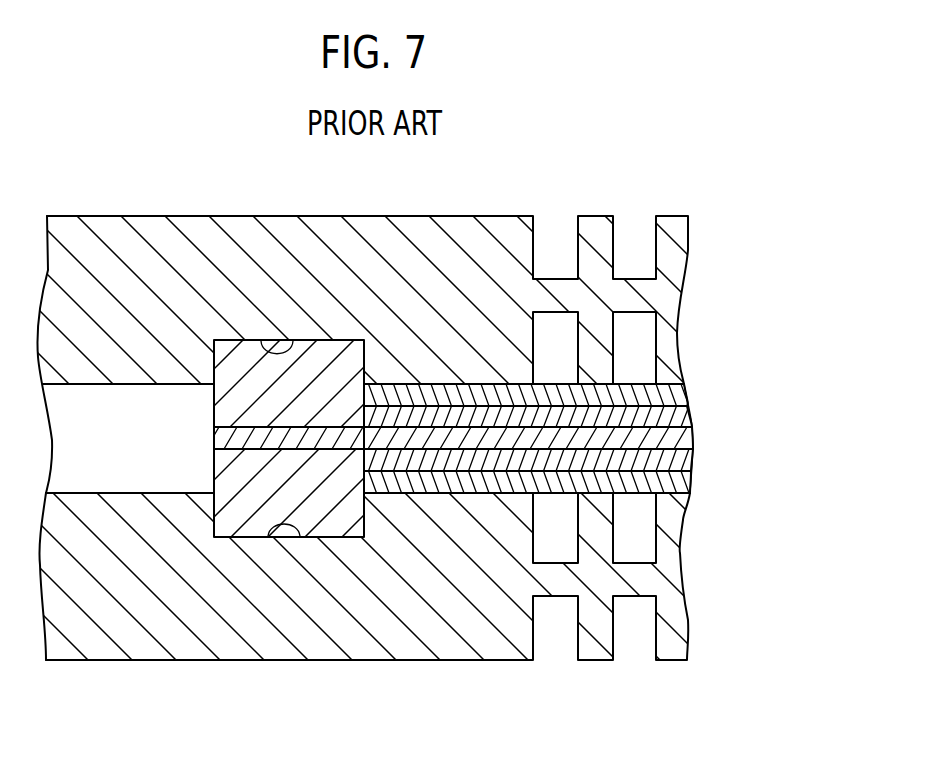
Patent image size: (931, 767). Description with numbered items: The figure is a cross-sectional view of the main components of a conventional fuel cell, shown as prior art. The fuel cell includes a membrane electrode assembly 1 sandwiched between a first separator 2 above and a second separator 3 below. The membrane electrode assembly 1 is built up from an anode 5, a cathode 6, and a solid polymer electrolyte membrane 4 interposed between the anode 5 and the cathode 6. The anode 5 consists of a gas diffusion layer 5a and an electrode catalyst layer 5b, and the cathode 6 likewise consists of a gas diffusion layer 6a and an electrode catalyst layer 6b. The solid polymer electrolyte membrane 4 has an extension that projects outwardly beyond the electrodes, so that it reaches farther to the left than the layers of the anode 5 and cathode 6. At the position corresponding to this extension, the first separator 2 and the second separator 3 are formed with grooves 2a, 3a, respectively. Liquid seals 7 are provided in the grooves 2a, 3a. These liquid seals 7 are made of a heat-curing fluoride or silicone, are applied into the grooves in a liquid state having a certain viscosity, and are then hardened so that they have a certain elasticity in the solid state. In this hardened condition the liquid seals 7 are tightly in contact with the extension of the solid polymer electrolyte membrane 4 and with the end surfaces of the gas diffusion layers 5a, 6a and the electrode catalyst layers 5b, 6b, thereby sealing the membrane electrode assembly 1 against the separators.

The membrane electrode assembly 1 is at (795, 373).
The first separator 2 is at (665, 303).
The groove 2a is at (293, 341).
The second separator 3 is at (665, 580).
The groove 3a is at (302, 538).
The solid polymer electrolyte membrane 4 is at (680, 445).
The anode 5 is at (750, 373).
The gas diffusion layer 5a is at (672, 398).
The electrode catalyst layer 5b is at (677, 413).
The cathode 6 is at (750, 460).
The gas diffusion layer 6a is at (673, 477).
The electrode catalyst layer 6b is at (678, 463).
The liquid seal 7 is at (247, 465).